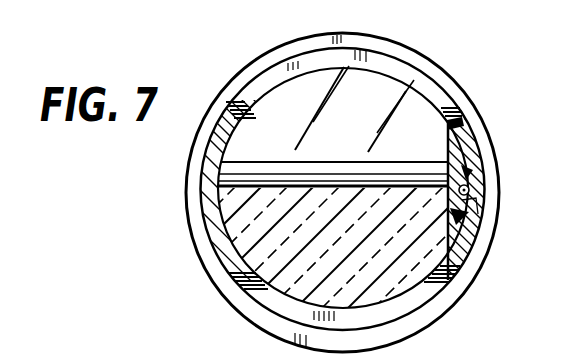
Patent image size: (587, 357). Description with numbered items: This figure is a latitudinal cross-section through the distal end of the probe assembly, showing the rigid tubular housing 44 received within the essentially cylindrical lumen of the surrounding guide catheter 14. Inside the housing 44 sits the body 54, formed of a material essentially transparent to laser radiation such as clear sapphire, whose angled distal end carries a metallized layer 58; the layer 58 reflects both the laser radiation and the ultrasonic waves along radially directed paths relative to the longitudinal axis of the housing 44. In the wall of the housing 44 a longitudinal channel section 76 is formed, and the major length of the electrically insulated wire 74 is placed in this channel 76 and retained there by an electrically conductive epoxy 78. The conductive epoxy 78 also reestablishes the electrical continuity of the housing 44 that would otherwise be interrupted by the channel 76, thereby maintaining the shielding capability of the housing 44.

The guide catheter 14 is at (438, 68).
The rigid tubular housing 44 is at (462, 247).
The body 54 is at (345, 242).
The metallized layer 58 is at (357, 137).
The electrically insulated wire 74 is at (470, 190).
The longitudinal channel section 76 is at (495, 182).
The electrically conductive epoxy 78 is at (478, 203).